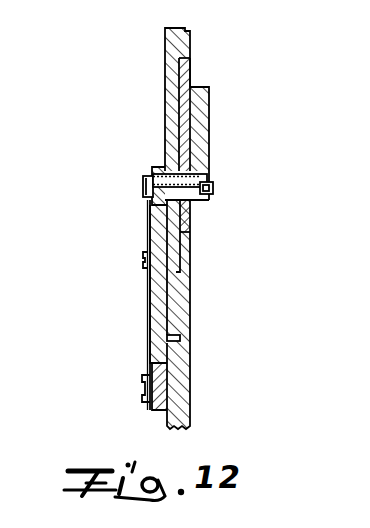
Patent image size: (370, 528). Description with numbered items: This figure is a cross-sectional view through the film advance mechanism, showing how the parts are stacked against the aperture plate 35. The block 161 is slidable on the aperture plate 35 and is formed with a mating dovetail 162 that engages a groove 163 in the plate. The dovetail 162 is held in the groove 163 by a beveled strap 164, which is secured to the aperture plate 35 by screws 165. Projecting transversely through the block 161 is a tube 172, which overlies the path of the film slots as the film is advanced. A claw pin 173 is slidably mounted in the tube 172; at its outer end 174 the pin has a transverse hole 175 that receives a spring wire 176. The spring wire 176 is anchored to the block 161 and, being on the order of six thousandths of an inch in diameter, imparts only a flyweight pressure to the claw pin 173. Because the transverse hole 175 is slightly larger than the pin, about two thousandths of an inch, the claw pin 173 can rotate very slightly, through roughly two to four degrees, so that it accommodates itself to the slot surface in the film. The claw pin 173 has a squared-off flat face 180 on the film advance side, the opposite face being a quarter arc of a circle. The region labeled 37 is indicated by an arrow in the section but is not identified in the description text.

The aperture plate 35 is at (188, 375).
The panel assembly 37 is at (125, 233).
The block 161 is at (152, 308).
The dovetail 162 is at (179, 271).
The groove 163 is at (181, 339).
The beveled strap 164 is at (153, 408).
The screws 165 is at (144, 387).
The tube 172 is at (206, 177).
The claw pin 173 is at (211, 200).
The outer end 174 is at (142, 197).
The transverse hole 175 is at (143, 185).
The spring wire 176 is at (147, 221).
The flat face 180 is at (214, 189).